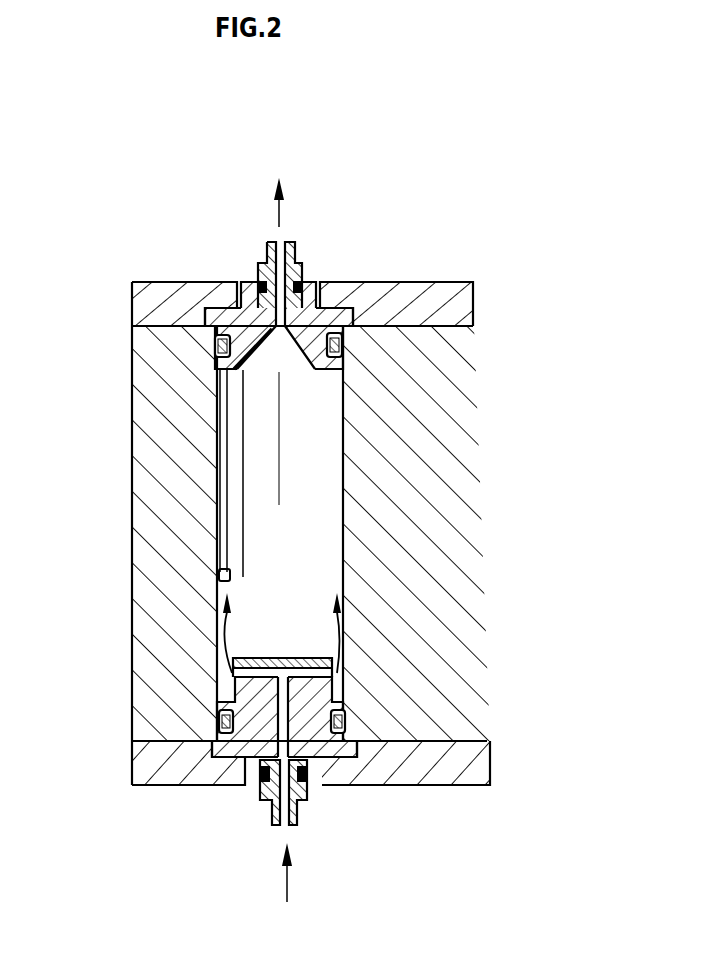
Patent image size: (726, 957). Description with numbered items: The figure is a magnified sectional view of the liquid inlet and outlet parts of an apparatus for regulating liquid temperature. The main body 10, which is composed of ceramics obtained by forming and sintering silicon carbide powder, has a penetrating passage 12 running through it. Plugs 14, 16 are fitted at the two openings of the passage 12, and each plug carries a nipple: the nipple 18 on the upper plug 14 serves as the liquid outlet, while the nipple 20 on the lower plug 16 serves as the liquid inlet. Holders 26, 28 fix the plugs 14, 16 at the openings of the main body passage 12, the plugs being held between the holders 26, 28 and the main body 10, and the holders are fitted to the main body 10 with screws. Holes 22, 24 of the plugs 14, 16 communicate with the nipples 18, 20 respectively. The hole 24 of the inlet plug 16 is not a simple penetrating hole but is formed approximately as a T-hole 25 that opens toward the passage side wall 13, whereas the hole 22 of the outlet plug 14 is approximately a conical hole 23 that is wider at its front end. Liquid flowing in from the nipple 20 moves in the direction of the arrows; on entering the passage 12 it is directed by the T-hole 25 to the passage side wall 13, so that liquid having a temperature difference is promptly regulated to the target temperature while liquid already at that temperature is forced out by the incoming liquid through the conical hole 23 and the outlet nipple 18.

The main body 10 is at (131, 540).
The passage 12 is at (245, 448).
The passage side wall 13 is at (220, 572).
The plug 14 is at (231, 326).
The plug 16 is at (233, 745).
The nipple 18 is at (292, 245).
The nipple 20 is at (293, 824).
The hole 22 is at (285, 321).
The conical hole 23 is at (266, 368).
The hole 24 is at (281, 737).
The T-hole 25 is at (247, 673).
The holder 26 is at (131, 303).
The holder 28 is at (135, 778).